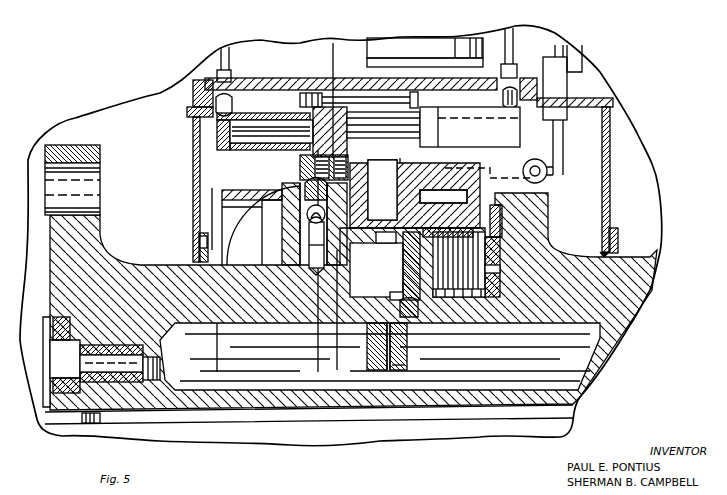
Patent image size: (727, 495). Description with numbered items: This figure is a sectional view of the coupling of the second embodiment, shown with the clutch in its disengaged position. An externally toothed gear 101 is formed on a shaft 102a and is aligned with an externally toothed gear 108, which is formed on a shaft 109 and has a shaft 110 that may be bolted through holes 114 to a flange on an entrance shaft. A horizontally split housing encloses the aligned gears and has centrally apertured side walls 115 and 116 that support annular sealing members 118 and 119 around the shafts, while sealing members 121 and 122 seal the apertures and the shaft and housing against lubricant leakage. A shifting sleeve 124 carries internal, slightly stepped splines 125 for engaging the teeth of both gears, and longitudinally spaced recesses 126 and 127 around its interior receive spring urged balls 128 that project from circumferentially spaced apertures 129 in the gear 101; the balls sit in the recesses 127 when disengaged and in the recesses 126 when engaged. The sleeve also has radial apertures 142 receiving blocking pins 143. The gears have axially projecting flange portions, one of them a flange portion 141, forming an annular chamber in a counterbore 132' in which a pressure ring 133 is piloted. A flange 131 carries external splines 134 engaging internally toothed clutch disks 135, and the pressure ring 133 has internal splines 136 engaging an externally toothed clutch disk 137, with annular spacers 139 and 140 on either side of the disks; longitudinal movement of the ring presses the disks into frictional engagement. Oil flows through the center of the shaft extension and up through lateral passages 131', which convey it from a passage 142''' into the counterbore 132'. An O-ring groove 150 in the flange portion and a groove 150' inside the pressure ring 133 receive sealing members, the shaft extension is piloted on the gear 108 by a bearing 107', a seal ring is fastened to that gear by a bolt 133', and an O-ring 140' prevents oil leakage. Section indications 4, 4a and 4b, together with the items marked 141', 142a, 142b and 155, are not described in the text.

The section line 4 is at (326, 53).
The section line 4a is at (296, 165).
The section line 4b is at (206, 206).
The externally toothed gear 101 is at (548, 208).
The shaft 102a is at (660, 252).
The bearing 107' is at (107, 372).
The externally toothed gear 108 is at (306, 237).
The shaft 109 is at (113, 250).
The shaft 110 is at (100, 155).
The holes 114 is at (100, 188).
The side wall 115 is at (193, 170).
The side wall 116 is at (610, 190).
The annular sealing member 118 is at (618, 235).
The annular sealing member 119 is at (208, 240).
The sealing member 121 is at (600, 252).
The sealing member 122 is at (208, 258).
The shifting sleeve 124 is at (236, 192).
The splines 125 is at (450, 198).
The recesses 126 is at (240, 210).
The recesses 127 is at (303, 198).
The spring urged camming members or balls 128 is at (306, 218).
The apertures 129 is at (306, 246).
The flange 131 is at (380, 356).
The oil passages 131' is at (413, 346).
The counterbore 132' is at (392, 294).
The pressure ring 133 is at (380, 208).
The bolt 133' is at (386, 309).
The splines 134 is at (470, 291).
The clutch disks 135 is at (480, 248).
The splines 136 is at (466, 223).
The clutch disk 137 is at (495, 258).
The annular spacer 139 is at (498, 272).
The annular spacer 140 is at (385, 266).
The O-ring 140' is at (363, 346).
The flange portion 141 is at (356, 348).
The sleeve ring 141' is at (414, 368).
The apertures 142 is at (415, 194).
The linkage 142a is at (484, 170).
The plate tab 142b is at (403, 155).
The passage 142''' is at (255, 428).
The blocking pins 143 is at (391, 196).
The O-ring groove 150 is at (388, 245).
The groove 150' is at (383, 296).
The spring 155 is at (305, 168).